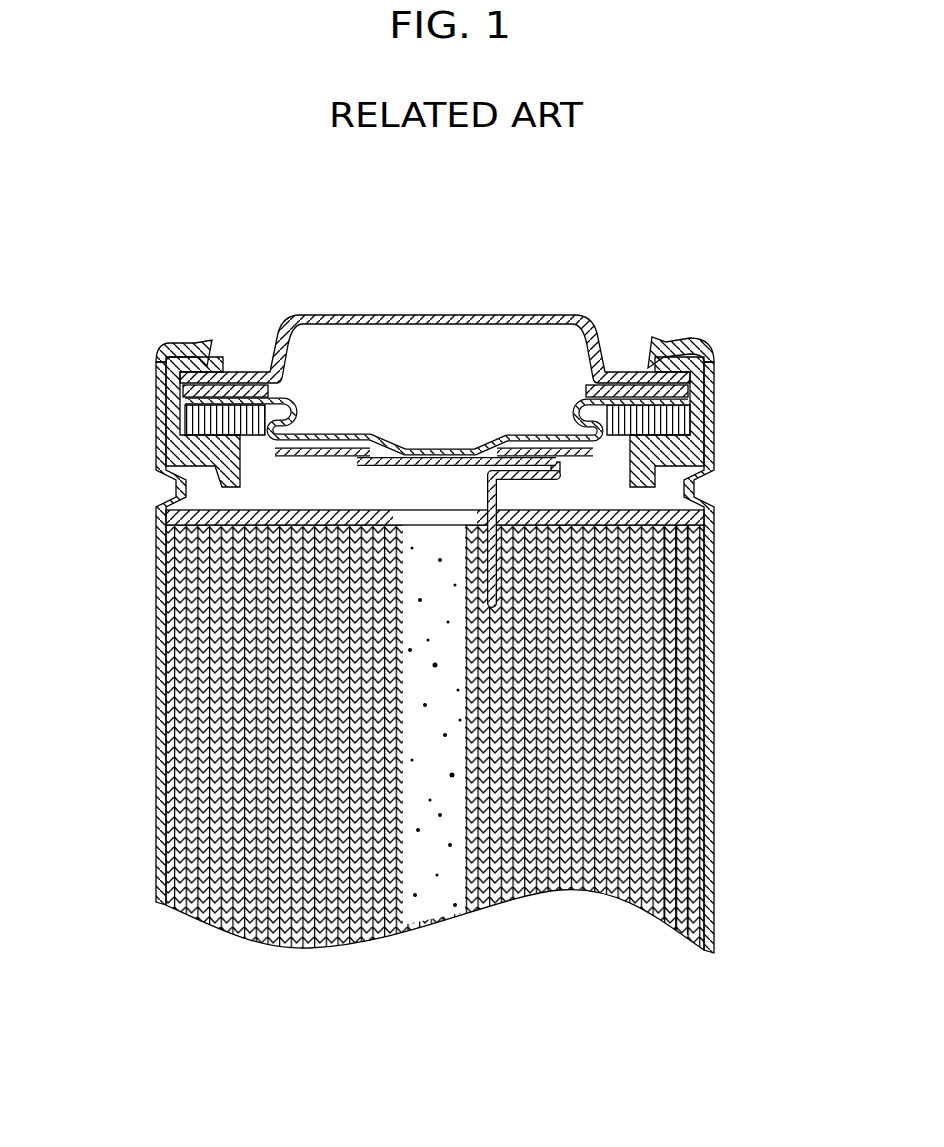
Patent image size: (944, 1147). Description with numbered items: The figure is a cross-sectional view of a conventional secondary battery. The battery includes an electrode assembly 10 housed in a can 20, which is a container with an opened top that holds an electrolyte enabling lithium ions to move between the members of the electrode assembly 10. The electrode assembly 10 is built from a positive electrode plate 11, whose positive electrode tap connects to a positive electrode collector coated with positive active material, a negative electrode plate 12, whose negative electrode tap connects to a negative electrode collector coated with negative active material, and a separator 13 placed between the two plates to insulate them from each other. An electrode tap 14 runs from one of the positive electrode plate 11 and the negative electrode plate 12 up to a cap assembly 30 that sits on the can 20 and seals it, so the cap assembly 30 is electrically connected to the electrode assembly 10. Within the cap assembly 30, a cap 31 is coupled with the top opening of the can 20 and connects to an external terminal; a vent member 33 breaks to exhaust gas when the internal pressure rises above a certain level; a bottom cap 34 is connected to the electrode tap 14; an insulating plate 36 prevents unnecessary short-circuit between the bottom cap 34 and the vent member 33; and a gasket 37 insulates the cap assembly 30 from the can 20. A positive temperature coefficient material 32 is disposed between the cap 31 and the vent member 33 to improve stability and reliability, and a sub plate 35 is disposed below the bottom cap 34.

The electrode assembly 10 is at (790, 480).
The positive electrode plate 11 is at (663, 713).
The negative electrode plate 12 is at (690, 632).
The separator 13 is at (670, 673).
The electrode tap 14 is at (560, 479).
The can 20 is at (153, 630).
The cap assembly 30 is at (454, 340).
The cap 31 is at (386, 315).
The positive temperature coefficient (PTC) material 32 is at (597, 383).
The vent member 33 is at (624, 398).
The bottom cap 34 is at (456, 353).
The sub plate 35 is at (465, 436).
The insulating plate 36 is at (672, 372).
The gasket 37 is at (710, 342).